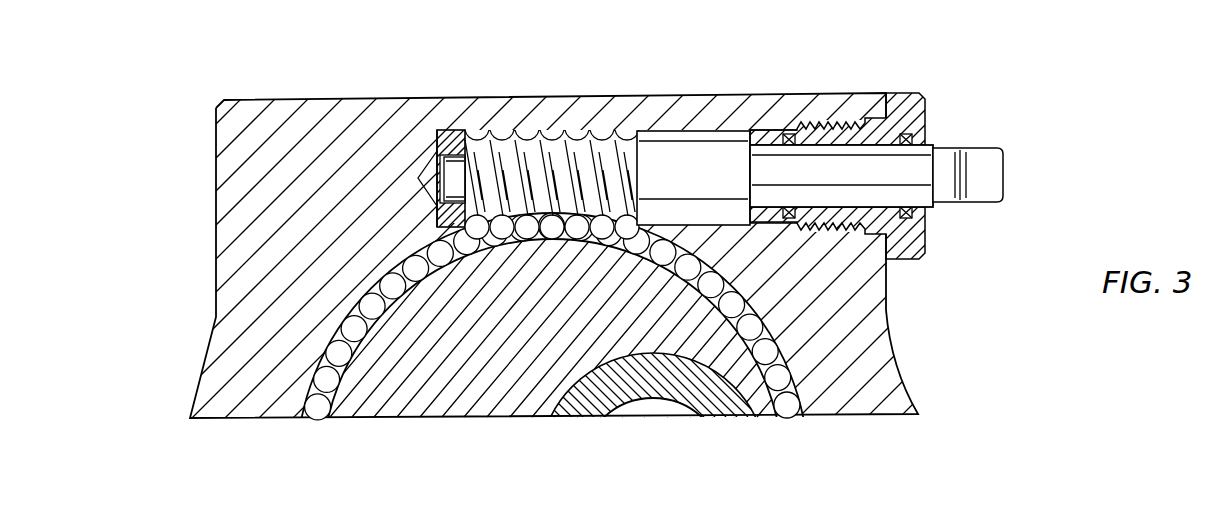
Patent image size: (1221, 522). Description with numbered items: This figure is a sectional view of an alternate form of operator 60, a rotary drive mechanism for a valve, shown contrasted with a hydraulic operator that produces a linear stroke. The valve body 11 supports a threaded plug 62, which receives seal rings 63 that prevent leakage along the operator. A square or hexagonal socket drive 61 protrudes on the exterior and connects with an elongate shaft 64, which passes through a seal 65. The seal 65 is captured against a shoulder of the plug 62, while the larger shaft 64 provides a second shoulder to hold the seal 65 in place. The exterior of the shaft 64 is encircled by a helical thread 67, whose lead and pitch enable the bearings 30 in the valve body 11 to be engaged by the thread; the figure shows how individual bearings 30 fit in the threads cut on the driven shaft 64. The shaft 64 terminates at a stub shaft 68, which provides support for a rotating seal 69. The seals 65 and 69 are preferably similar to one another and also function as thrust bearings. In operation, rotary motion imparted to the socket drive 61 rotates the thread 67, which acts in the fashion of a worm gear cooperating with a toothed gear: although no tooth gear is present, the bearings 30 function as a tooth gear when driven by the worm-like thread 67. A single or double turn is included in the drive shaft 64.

The valve body 11 is at (902, 392).
The bearings 30 is at (322, 412).
The operator 60 is at (719, 168).
The socket drive 61 is at (998, 211).
The threaded plug 62 is at (913, 252).
The seal rings 63 is at (903, 135).
The elongate shaft 64 is at (825, 162).
The seal 65 is at (757, 132).
The helical thread 67 is at (623, 145).
The stub shaft 68 is at (452, 175).
The rotating seal 69 is at (448, 138).